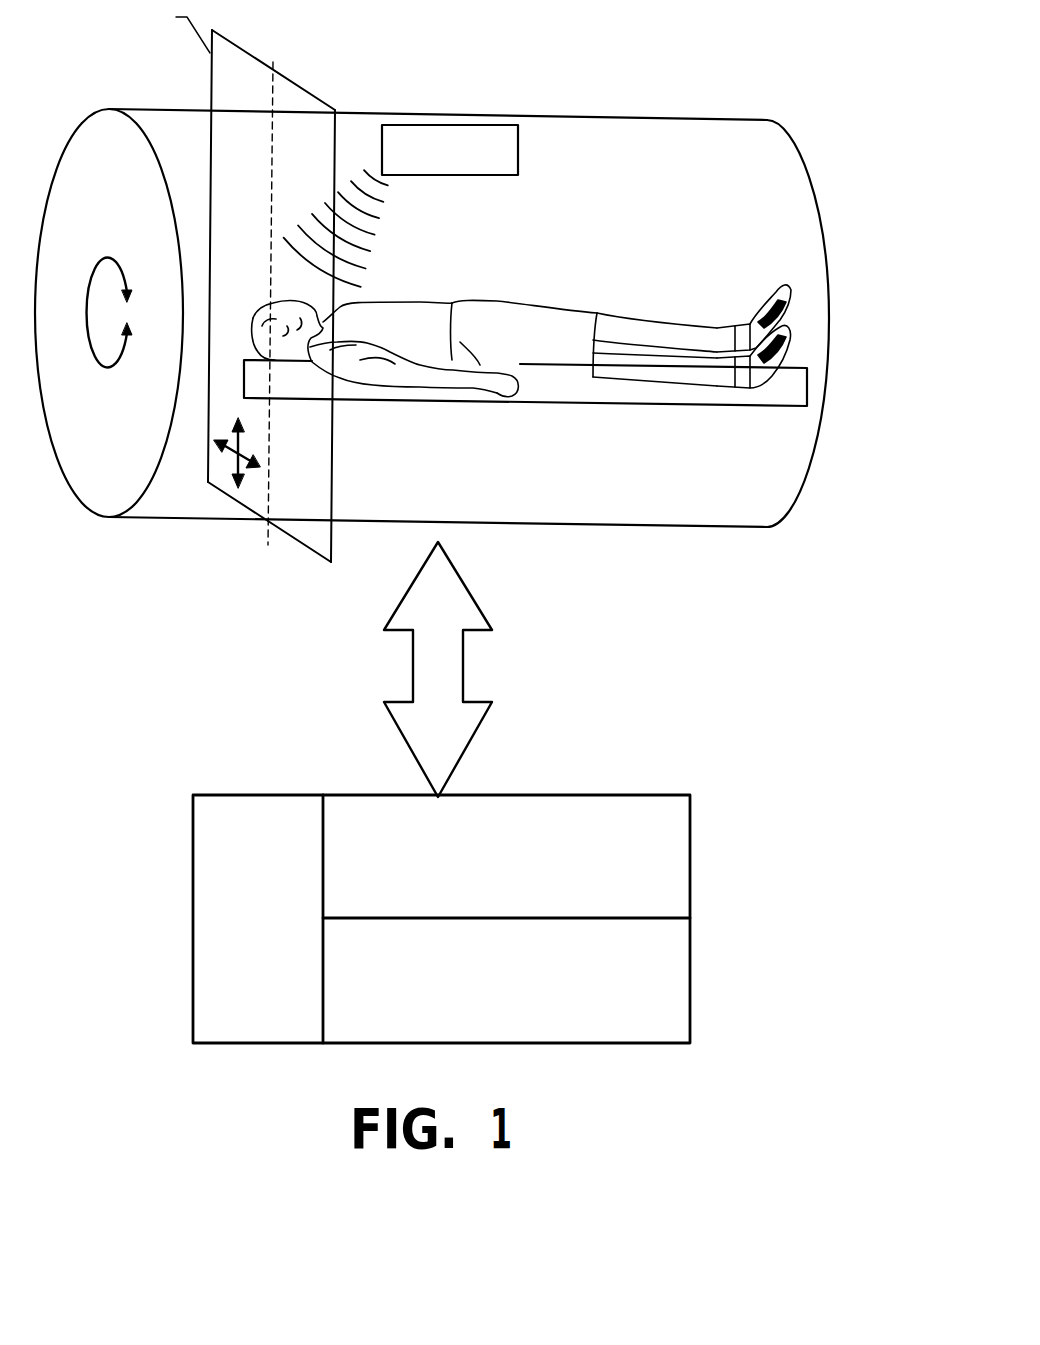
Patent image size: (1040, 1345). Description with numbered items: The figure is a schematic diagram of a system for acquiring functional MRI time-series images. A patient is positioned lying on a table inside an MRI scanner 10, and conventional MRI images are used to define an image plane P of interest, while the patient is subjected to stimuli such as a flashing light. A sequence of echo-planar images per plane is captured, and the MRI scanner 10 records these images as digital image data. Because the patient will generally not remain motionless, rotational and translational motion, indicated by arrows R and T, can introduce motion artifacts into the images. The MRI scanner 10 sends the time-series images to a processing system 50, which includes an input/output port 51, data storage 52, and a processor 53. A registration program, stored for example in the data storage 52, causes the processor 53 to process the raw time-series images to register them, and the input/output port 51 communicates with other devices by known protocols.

The MRI scanner 10 is at (700, 84).
The processing system 50 is at (478, 860).
The input/output port 51 is at (222, 808).
The data storage 52 is at (540, 807).
The processor 53 is at (666, 950).